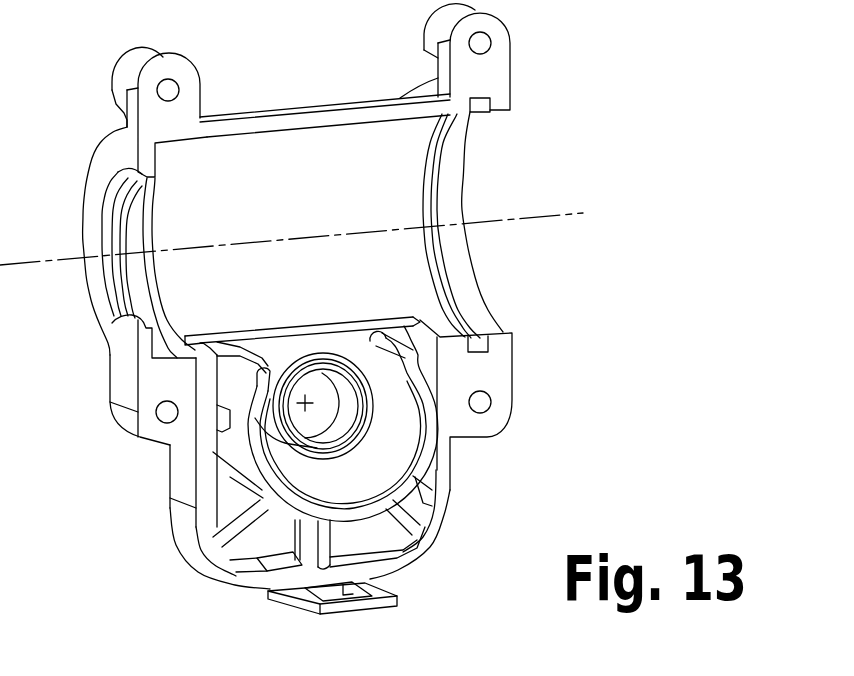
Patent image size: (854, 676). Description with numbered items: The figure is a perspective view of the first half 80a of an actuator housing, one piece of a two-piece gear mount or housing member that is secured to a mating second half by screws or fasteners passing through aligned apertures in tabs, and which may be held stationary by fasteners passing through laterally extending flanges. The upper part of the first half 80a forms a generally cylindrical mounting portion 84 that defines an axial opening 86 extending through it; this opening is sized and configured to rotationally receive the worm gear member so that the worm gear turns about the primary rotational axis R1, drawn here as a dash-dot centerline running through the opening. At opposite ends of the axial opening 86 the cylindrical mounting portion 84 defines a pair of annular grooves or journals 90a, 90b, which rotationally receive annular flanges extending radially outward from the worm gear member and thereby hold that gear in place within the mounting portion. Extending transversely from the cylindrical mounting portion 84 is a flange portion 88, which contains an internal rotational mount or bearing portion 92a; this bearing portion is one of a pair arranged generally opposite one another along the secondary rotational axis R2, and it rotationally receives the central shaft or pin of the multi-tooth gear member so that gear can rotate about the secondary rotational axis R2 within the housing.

The cylindrical mounting portion 84 is at (337, 105).
The axial opening 86 is at (310, 199).
The flange portion 88 is at (160, 529).
The annular groove or journal 90a is at (143, 318).
The annular groove or journal 90b is at (478, 104).
The internal rotational mount or bearing portion 92a is at (330, 436).
The first half 80a is at (186, 544).
The primary rotational axis R1 is at (557, 216).
The secondary rotational axis R2 is at (308, 407).